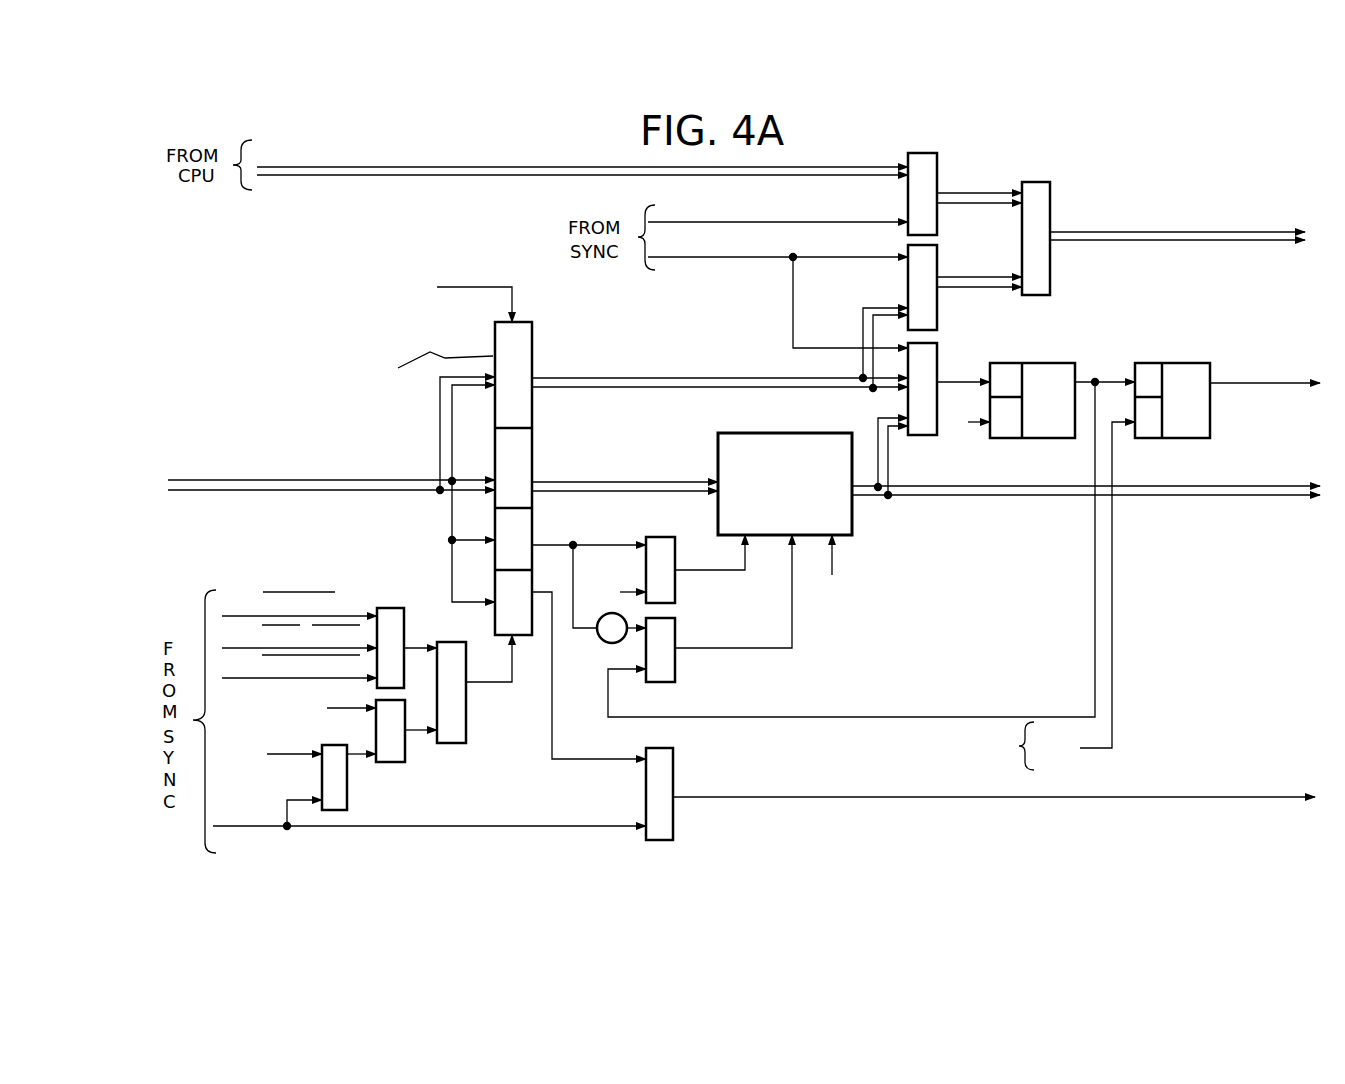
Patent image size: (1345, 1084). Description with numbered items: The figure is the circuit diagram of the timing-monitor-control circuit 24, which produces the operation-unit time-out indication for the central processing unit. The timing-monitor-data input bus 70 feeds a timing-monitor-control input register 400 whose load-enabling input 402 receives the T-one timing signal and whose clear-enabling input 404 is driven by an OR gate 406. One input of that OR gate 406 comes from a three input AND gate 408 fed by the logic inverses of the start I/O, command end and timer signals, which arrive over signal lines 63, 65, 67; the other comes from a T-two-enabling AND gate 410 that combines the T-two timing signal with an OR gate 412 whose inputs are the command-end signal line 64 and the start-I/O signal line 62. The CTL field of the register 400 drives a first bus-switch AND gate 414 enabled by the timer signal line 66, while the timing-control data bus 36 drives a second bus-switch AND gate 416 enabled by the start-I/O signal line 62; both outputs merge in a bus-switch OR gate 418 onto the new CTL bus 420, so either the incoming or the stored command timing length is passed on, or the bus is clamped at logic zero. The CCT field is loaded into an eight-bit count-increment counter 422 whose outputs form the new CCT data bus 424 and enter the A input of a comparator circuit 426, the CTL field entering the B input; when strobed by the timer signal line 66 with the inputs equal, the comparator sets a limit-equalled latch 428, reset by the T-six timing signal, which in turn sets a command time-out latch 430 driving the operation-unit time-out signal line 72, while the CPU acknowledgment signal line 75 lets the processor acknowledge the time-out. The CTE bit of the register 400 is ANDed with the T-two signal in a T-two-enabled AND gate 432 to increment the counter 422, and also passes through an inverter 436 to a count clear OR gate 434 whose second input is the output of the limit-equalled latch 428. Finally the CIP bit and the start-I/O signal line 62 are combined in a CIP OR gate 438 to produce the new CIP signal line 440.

The timing-monitor-control circuit 24 is at (437, 840).
The timing-control data bus 36 is at (603, 167).
The start-I/O signal line 62 is at (838, 220).
The signal line 63 is at (245, 679).
The command-end signal line 64 is at (300, 756).
The signal line 65 is at (245, 648).
The timer signal line 66 is at (712, 258).
The signal line 67 is at (247, 614).
The timing-monitor-data input bus 70 is at (355, 492).
The operation-unit time-out signal line 72 is at (1218, 380).
The CPU acknowledgment signal line 75 is at (1115, 614).
The timing-monitor-control input register 400 is at (535, 345).
The load-enabling input 402 is at (507, 318).
The clear-enabling input 404 is at (500, 642).
The OR gate 406 is at (456, 745).
The three input AND gate 408 is at (400, 608).
The T2-enabling AND gate 410 is at (382, 762).
The OR gate 412 is at (324, 745).
The first bus-switch AND gate 414 is at (937, 305).
The second bus-switch AND gate 416 is at (920, 153).
The bus-switch OR gate 418 is at (1035, 182).
The new CTL bus 420 is at (1110, 242).
The count-increment counter 422 is at (692, 501).
The new CCT data bus 424 is at (1193, 498).
The comparator circuit 426 is at (918, 435).
The limit-equalled latch 428 is at (1025, 363).
The command time-out latch 430 is at (1170, 363).
The T2-enabled AND gate 432 is at (660, 537).
The count clear OR gate 434 is at (676, 633).
The inverter 436 is at (610, 645).
The CIP OR gate 438 is at (676, 772).
The new CIP signal line 440 is at (915, 798).